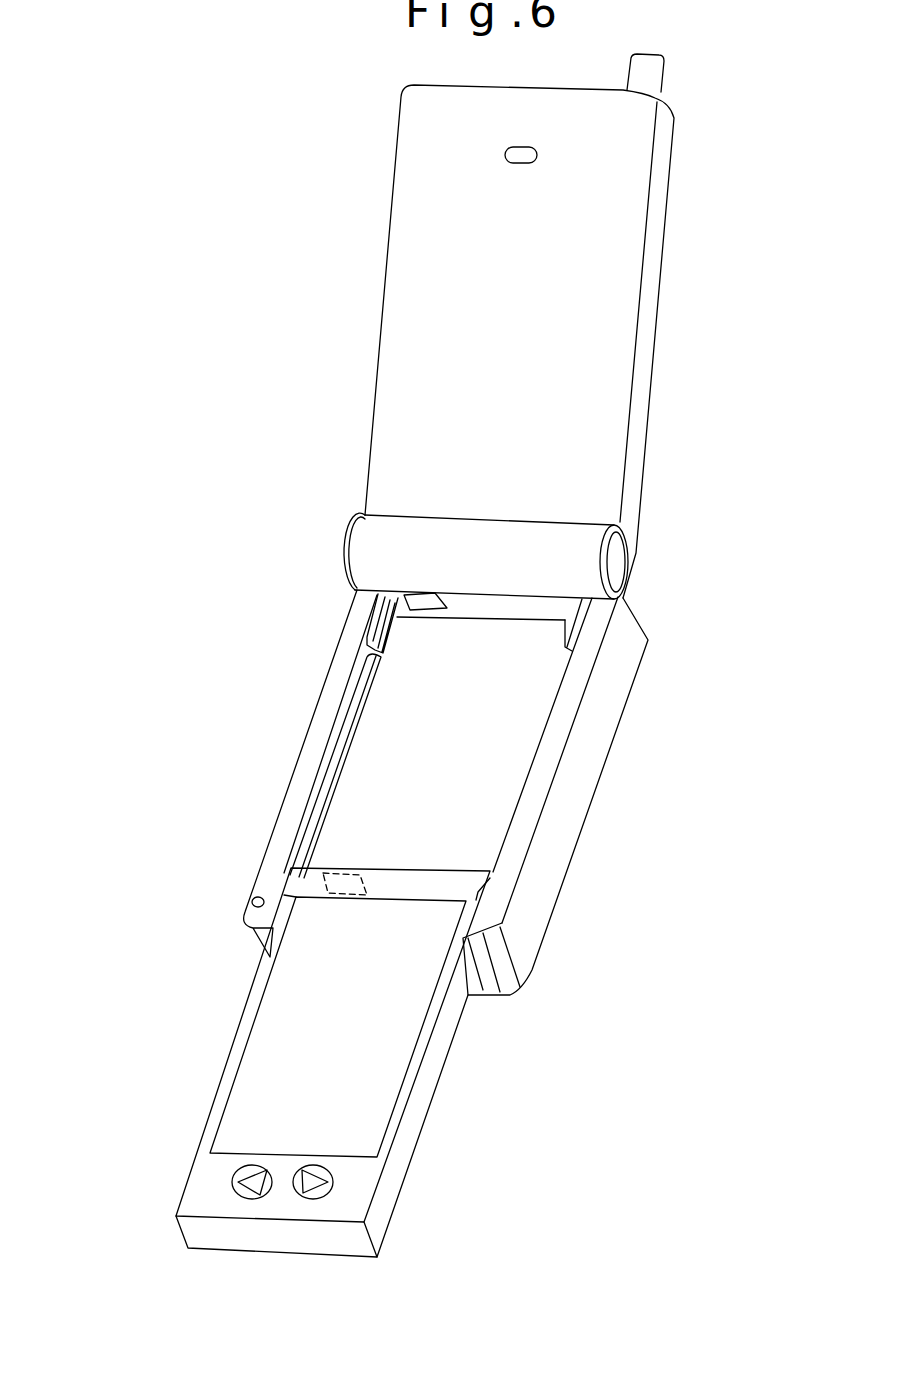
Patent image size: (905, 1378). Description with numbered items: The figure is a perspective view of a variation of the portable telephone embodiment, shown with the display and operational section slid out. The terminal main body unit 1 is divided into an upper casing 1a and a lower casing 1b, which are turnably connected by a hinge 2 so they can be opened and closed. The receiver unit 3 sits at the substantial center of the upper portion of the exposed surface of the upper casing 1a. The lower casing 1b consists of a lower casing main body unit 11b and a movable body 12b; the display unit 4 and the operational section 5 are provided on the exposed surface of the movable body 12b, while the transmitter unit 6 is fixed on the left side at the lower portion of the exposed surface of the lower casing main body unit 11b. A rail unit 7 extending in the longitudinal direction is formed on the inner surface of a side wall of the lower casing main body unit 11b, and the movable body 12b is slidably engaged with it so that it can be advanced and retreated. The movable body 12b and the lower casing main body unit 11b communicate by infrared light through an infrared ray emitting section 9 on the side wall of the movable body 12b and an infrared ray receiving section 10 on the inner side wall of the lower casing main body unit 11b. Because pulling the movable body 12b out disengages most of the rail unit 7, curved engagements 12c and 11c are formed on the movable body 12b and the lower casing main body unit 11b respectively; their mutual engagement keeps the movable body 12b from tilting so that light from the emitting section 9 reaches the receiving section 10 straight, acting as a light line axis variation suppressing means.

The terminal main body unit 1 is at (333, 393).
The upper casing 1a is at (607, 313).
The lower casing 1b is at (468, 792).
The hinge 2 is at (568, 562).
The receiver unit 3 is at (537, 154).
The display unit 4 is at (287, 1055).
The operational section 5 is at (323, 1175).
The transmitter unit 6 is at (252, 900).
The rail unit 7 is at (328, 763).
The infrared ray emitting section 9 is at (282, 866).
The infrared ray receiving section 10 is at (432, 600).
The lower casing main body unit 11b is at (550, 868).
The curved engagement 11c is at (482, 920).
The movable body 12b is at (352, 1030).
The curved engagement 12c is at (478, 884).